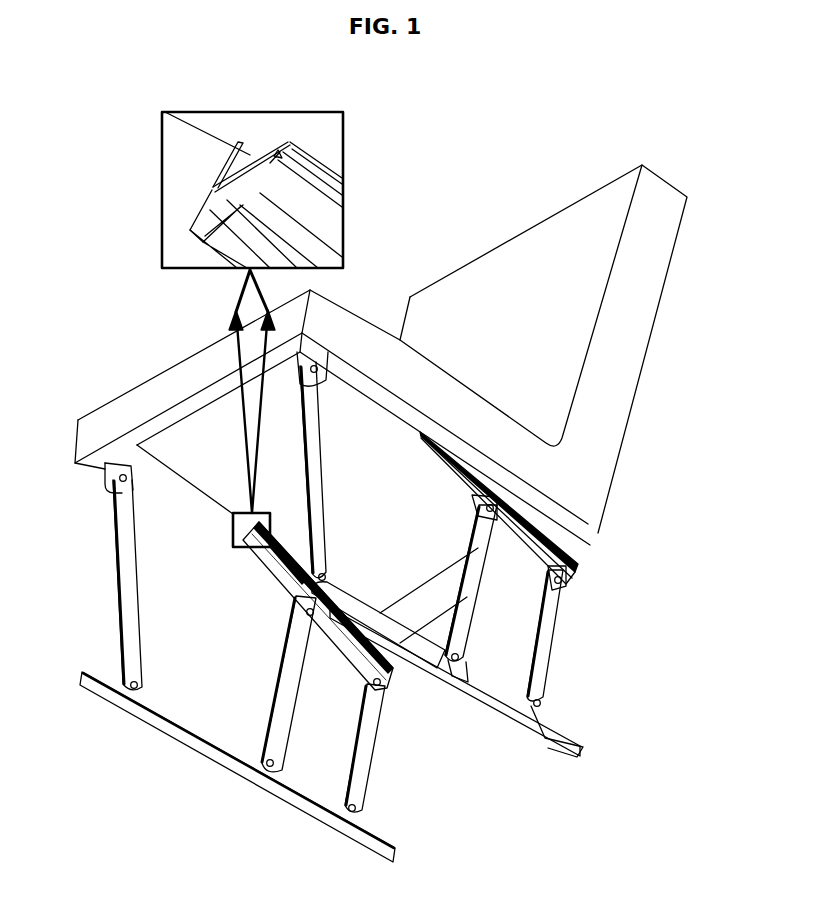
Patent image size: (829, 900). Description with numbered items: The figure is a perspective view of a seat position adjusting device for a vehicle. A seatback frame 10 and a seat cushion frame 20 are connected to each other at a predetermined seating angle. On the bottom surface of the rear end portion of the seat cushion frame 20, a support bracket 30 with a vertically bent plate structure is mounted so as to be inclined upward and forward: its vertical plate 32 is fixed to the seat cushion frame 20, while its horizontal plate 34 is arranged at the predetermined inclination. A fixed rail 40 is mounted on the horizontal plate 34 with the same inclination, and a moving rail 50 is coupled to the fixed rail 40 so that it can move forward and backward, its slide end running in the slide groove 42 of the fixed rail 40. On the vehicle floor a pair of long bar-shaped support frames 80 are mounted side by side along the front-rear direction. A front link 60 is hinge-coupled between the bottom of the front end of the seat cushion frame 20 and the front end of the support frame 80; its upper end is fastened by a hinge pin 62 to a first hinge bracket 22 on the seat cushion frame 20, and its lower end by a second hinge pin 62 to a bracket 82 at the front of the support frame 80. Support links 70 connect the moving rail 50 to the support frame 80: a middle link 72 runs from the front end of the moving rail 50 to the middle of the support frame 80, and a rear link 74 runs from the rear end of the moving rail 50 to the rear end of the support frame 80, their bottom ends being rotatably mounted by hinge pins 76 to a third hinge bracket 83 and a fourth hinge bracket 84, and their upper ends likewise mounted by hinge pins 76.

The seatback frame 10 is at (645, 305).
The seat cushion frame 20 is at (343, 320).
The first hinge bracket 22 is at (318, 374).
The support bracket 30 is at (410, 348).
The vertical plate 32 is at (250, 157).
The horizontal plate 34 is at (317, 170).
The fixed rail 40 is at (217, 243).
The slide groove 42 is at (207, 217).
The moving rail 50 is at (348, 675).
The front link 60 is at (318, 467).
The hinge pin 62 is at (118, 491).
The support link 70 is at (449, 659).
The middle link 72 is at (280, 732).
The rear link 74 is at (362, 772).
The hinge pin 76 is at (658, 690).
The support frame 80 is at (235, 775).
The foot bracket 82 is at (328, 582).
The third hinge bracket 83 is at (470, 664).
The fourth hinge bracket 84 is at (580, 733).